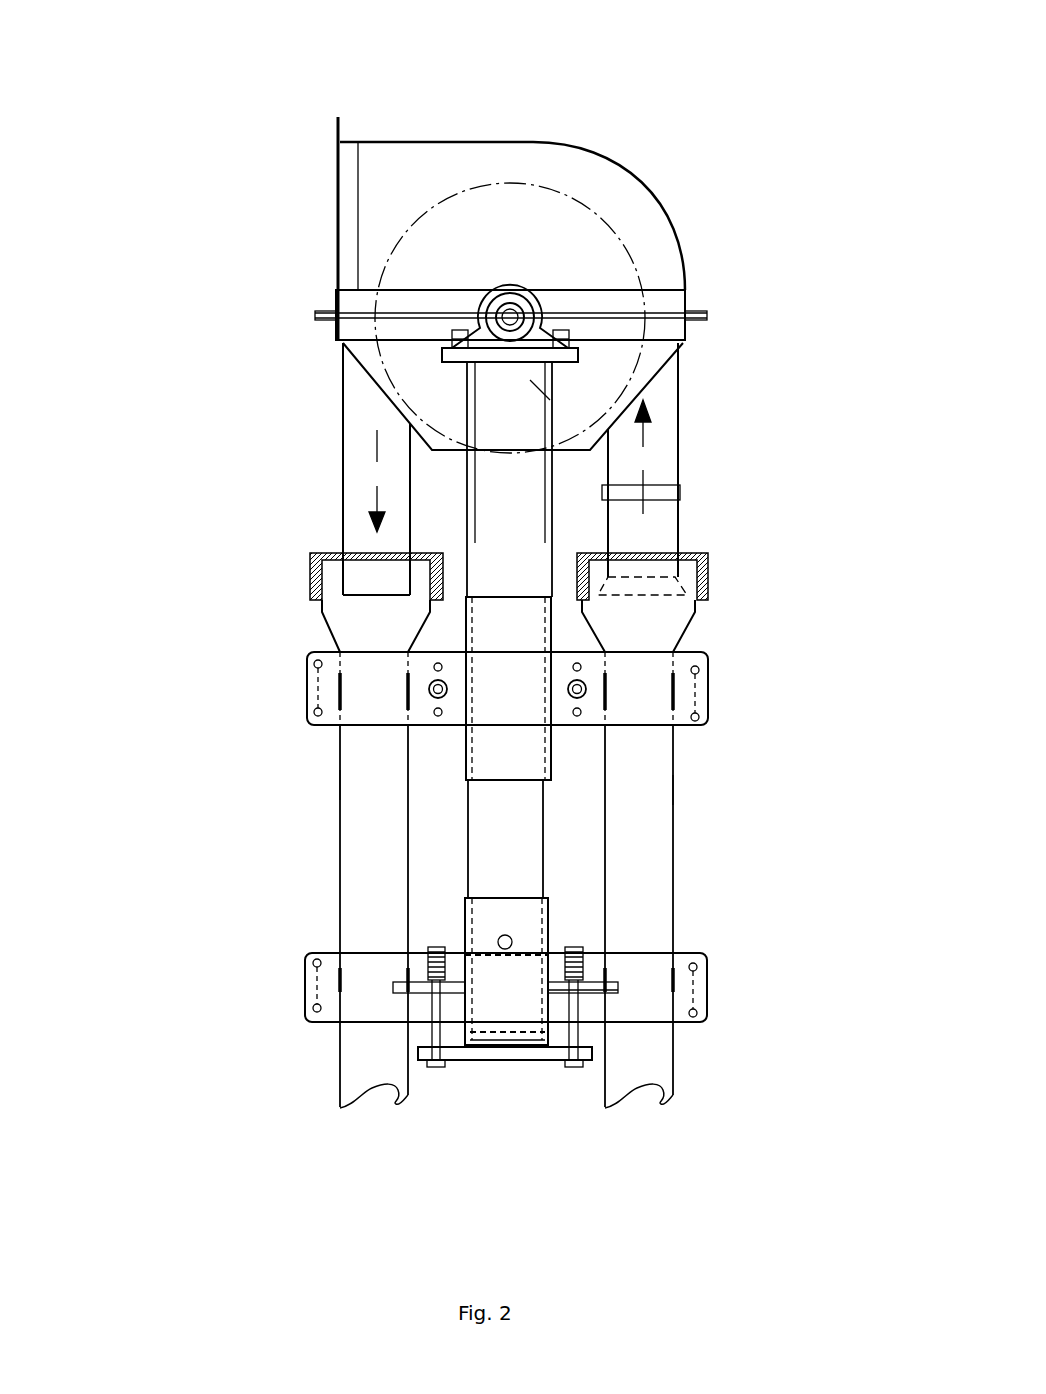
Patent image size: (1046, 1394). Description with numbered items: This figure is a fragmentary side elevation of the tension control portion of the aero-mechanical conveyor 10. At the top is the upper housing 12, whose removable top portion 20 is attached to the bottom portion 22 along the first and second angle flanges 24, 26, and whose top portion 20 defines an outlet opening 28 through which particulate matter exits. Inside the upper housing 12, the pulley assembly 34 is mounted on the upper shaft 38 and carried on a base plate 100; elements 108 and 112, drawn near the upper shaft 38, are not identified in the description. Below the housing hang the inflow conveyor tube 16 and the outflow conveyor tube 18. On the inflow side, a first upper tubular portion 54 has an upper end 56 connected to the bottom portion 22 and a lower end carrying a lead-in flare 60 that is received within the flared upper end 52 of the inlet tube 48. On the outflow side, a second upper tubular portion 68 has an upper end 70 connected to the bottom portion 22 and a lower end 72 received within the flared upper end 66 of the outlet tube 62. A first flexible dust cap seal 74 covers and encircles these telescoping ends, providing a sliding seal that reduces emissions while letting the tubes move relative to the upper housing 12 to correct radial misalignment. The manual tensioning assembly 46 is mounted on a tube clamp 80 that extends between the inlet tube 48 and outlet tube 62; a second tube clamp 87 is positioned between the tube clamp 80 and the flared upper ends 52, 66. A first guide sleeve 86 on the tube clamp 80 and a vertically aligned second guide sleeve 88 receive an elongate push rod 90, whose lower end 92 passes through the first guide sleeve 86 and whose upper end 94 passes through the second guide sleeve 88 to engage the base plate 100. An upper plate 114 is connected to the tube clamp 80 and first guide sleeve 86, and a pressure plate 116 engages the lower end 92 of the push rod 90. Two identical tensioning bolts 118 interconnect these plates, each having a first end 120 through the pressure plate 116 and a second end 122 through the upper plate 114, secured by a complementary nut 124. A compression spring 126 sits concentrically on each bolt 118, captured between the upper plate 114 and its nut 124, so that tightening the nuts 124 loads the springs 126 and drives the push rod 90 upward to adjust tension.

The aero-mechanical conveyor 10 is at (183, 430).
The upper housing 12 is at (655, 207).
The inflow conveyor tube 16 is at (675, 790).
The outflow conveyor tube 18 is at (337, 785).
The top portion 20 is at (516, 290).
The bottom portion 22 is at (640, 393).
The first angle flange 24 is at (687, 337).
The second angle flange 26 is at (687, 307).
The outlet opening 28 is at (338, 192).
The pulley assembly 34 is at (488, 185).
The upper shaft 38 is at (528, 300).
The manual tensioning assembly 46 is at (557, 905).
The inlet tube 48 is at (675, 750).
The flared upper end 52 is at (697, 613).
The first upper tubular portion 54 is at (680, 472).
The upper end 56 is at (680, 363).
The lead-in flare 60 is at (708, 580).
The outlet tube 62 is at (338, 740).
The flared upper end 66 is at (322, 625).
The second upper tubular portion 68 is at (343, 438).
The upper end 70 is at (342, 357).
The lower end 72 is at (307, 577).
The first flexible dust cap seal 74 is at (708, 557).
The tube clamp 80 is at (705, 982).
The first guide sleeve 86 is at (465, 898).
The second tube clamp 87 is at (708, 700).
The second guide sleeve 88 is at (467, 760).
The push rod 90 is at (545, 830).
The lower end 92 is at (587, 1038).
The upper end 94 is at (548, 400).
The base plate 100 is at (447, 370).
The shaft bore 108 is at (497, 288).
The bearing ring 112 is at (522, 296).
The upper plate 114 is at (610, 990).
The pressure plate 116 is at (522, 1060).
The tensioning bolts 118 is at (428, 1008).
The first end 120 is at (435, 1067).
The second end 122 is at (397, 987).
The nuts 124 is at (428, 957).
The springs 126 is at (405, 968).